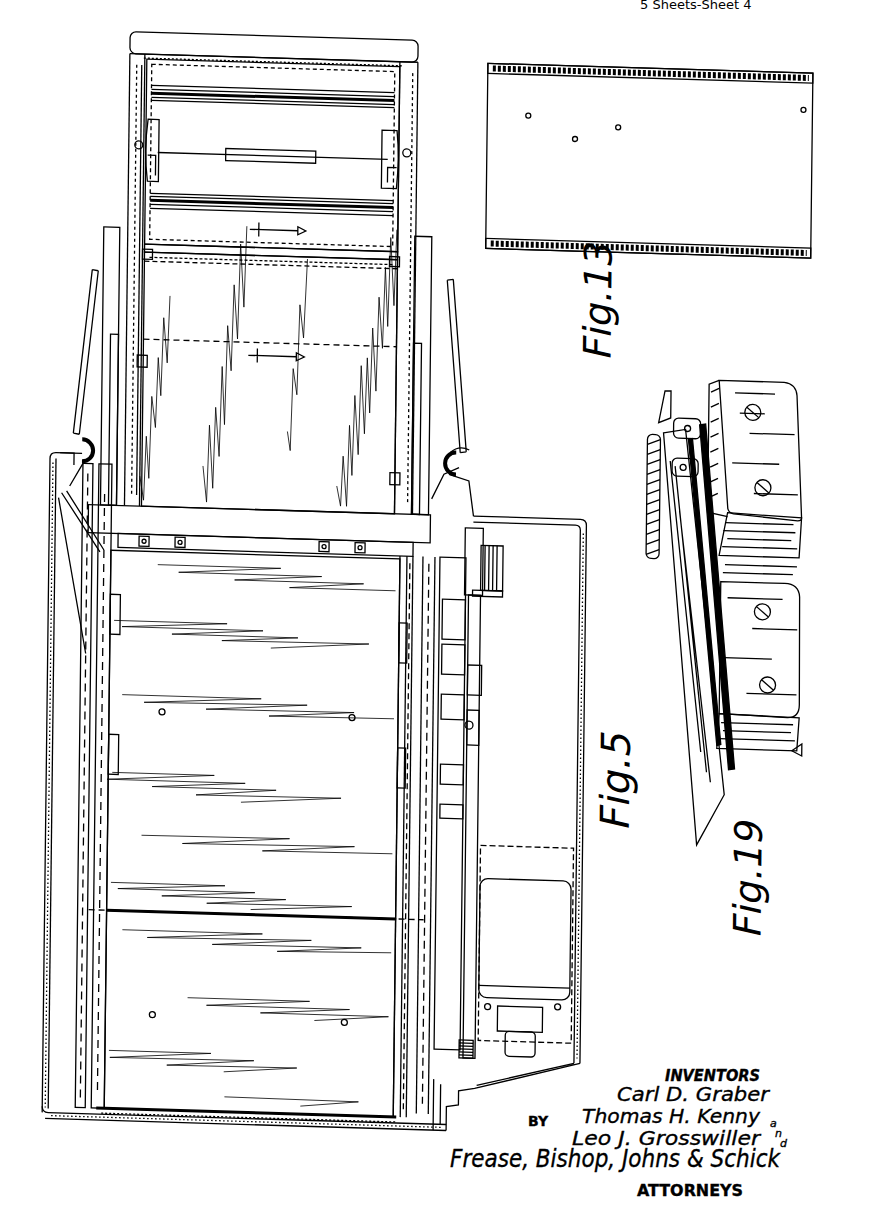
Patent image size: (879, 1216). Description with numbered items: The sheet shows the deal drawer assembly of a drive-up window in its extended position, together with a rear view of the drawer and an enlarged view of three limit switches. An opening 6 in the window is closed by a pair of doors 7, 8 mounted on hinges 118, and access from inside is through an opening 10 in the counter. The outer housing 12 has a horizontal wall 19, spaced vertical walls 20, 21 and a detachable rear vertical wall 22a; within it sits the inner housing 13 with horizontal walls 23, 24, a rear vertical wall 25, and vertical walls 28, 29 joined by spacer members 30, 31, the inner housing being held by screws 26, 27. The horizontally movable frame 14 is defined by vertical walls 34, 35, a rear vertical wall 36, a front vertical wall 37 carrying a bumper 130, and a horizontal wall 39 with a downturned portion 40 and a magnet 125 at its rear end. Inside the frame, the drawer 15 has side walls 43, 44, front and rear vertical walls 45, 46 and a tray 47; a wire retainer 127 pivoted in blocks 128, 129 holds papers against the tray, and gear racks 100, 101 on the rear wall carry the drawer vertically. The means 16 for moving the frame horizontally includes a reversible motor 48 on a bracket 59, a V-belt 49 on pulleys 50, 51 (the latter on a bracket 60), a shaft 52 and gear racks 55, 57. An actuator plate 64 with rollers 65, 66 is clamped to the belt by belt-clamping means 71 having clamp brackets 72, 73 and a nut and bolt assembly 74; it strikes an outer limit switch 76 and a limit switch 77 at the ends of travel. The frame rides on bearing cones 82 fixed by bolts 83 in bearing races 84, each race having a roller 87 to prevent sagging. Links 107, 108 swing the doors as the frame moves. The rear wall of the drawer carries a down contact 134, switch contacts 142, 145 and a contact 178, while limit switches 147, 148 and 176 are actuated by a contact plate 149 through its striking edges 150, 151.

In FIG. 5, the opening 6 is at (450, 452).
In FIG. 5, the door 7 is at (453, 334).
In FIG. 5, the door 8 is at (80, 328).
In FIG. 5, the opening 10 is at (277, 293).
In FIG. 5, the outer housing 12 is at (508, 510).
In FIG. 5, the inner housing 13 is at (80, 900).
In FIG. 5, the horizontally movable frame 14 is at (120, 183).
In FIG. 5, the drawer 15 is at (160, 70).
In FIG. 13, the drawer 15 is at (741, 247).
In FIG. 5, the means for moving the frame horizontally 16 is at (495, 688).
In FIG. 5, the horizontal wall 19 is at (543, 740).
In FIG. 5, the vertical wall 20 is at (586, 680).
In FIG. 5, the vertical wall 21 is at (46, 700).
In FIG. 5, the rear vertical wall 22a is at (250, 1127).
In FIG. 5, the horizontal wall 23 is at (249, 1013).
In FIG. 5, the horizontal wall 24 is at (350, 553).
In FIG. 5, the rear vertical wall 25 is at (312, 914).
In FIG. 5, the screws 26 is at (162, 713).
In FIG. 5, the screws 27 is at (155, 1016).
In FIG. 5, the vertical wall 28 is at (434, 850).
In FIG. 19, the vertical wall 28 is at (643, 510).
In FIG. 5, the vertical wall 29 is at (78, 798).
In FIG. 5, the spacer member 30 is at (246, 512).
In FIG. 5, the spacer member 31 is at (214, 1113).
In FIG. 5, the vertical wall 34 is at (410, 214).
In FIG. 5, the vertical wall 35 is at (119, 212).
In FIG. 5, the rear vertical wall 36 is at (196, 350).
In FIG. 5, the front vertical wall 37 is at (360, 38).
In FIG. 5, the horizontal wall 39 is at (304, 432).
In FIG. 5, the downturned portion 40 is at (276, 267).
In FIG. 5, the side wall 43 is at (379, 204).
In FIG. 5, the side wall 44 is at (152, 128).
In FIG. 5, the front vertical wall 45 is at (240, 62).
In FIG. 5, the rear vertical wall 46 is at (212, 258).
In FIG. 13, the rear vertical wall 46 is at (566, 166).
In FIG. 5, the tray 47 is at (272, 150).
In FIG. 5, the reversible motor 48 is at (526, 951).
In FIG. 5, the V-belt 49 is at (479, 784).
In FIG. 5, the pulley 50 is at (462, 1042).
In FIG. 5, the pulley 51 is at (501, 588).
In FIG. 5, the shaft 52 is at (482, 540).
In FIG. 5, the gear rack 55 is at (424, 246).
In FIG. 5, the gear rack 57 is at (98, 244).
In FIG. 5, the bracket 59 is at (450, 803).
In FIG. 5, the bracket 60 is at (501, 555).
In FIG. 5, the actuator plate 64 is at (455, 808).
In FIG. 5, the roller 65 is at (455, 774).
In FIG. 5, the roller 66 is at (440, 640).
In FIG. 5, the belt-clamping means 71 is at (480, 732).
In FIG. 5, the upper clamp bracket 72 is at (472, 720).
In FIG. 5, the lower clamp bracket 73 is at (481, 674).
In FIG. 5, the clamping nut and bolt assembly 74 is at (460, 716).
In FIG. 5, the outer limit switch 76 is at (445, 483).
In FIG. 5, the limit switch 77 is at (450, 1095).
In FIG. 5, the bearing cone 82 is at (106, 270).
In FIG. 5, the bolts 83 is at (143, 366).
In FIG. 5, the bearing race 84 is at (119, 630).
In FIG. 5, the roller 87 is at (119, 765).
In FIG. 5, the gear rack 100 is at (384, 262).
In FIG. 13, the gear rack 100 is at (609, 68).
In FIG. 5, the gear rack 101 is at (143, 264).
In FIG. 13, the gear rack 101 is at (623, 233).
In FIG. 5, the link 107 is at (472, 484).
In FIG. 5, the link 108 is at (52, 520).
In FIG. 5, the hinges 118 is at (82, 444).
In FIG. 5, the magnet 125 is at (178, 553).
In FIG. 5, the retainer 127 is at (212, 156).
In FIG. 5, the block 128 is at (373, 150).
In FIG. 5, the block 129 is at (152, 164).
In FIG. 5, the bumper 130 is at (312, 40).
In FIG. 13, the down contact 134 is at (522, 108).
In FIG. 13, the switch contact 142 is at (608, 121).
In FIG. 13, the switch contact 145 is at (792, 97).
In FIG. 19, the limit switch 147 is at (735, 378).
In FIG. 19, the limit switch 148 is at (698, 570).
In FIG. 5, the contact plate 149 is at (468, 598).
In FIG. 19, the contact plate 149 is at (694, 637).
In FIG. 19, the striking edge 150 is at (690, 512).
In FIG. 19, the striking edge 151 is at (663, 380).
In FIG. 19, the limit switch 176 is at (776, 632).
In FIG. 13, the contact 178 is at (568, 129).